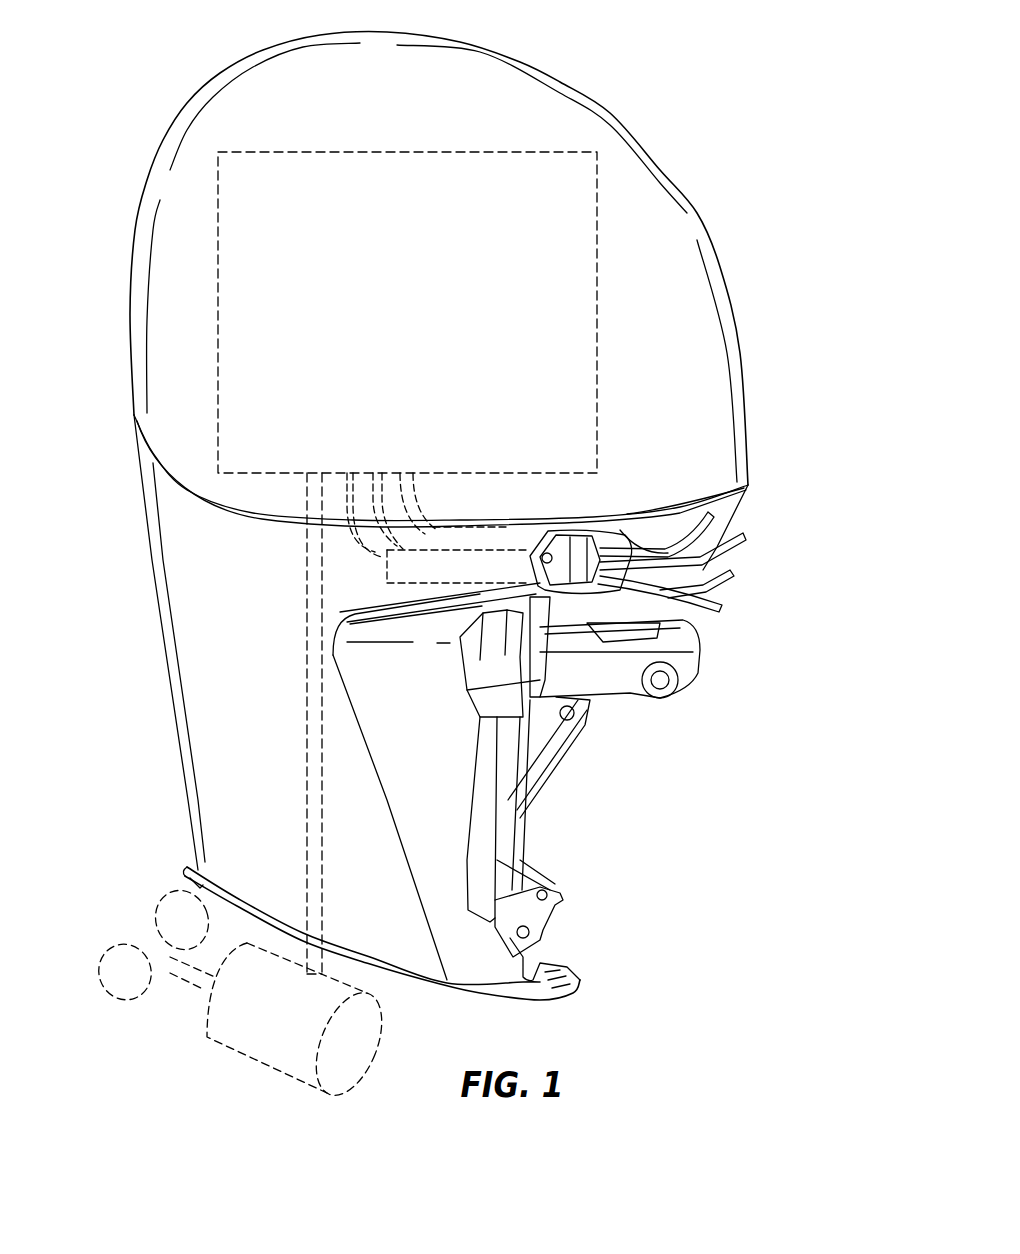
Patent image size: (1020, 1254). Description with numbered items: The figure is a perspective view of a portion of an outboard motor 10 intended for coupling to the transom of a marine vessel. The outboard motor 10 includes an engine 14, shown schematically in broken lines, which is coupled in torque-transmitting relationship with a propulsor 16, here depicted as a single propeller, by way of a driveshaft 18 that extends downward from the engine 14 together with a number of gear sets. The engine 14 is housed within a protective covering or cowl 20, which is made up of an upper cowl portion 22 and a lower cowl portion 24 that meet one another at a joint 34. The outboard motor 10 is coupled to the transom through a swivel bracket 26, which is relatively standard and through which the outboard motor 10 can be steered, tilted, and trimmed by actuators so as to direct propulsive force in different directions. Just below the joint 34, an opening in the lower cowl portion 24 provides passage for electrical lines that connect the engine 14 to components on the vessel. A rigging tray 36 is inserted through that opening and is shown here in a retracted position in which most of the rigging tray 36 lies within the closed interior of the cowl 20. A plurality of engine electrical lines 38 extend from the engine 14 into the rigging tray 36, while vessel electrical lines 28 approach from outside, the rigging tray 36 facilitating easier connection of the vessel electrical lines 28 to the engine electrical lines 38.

The outboard motor 10 is at (733, 87).
The engine 14 is at (417, 305).
The propulsor 16 is at (153, 1012).
The driveshaft 18 is at (305, 723).
The cowl 20 is at (119, 343).
The upper cowl portion 22 is at (700, 216).
The lower cowl portion 24 is at (730, 506).
The swivel bracket 26 is at (620, 693).
The vessel electrical lines 28 is at (753, 562).
The joint 34 is at (677, 505).
The rigging tray 36 is at (510, 548).
The engine electrical lines 38 is at (424, 495).